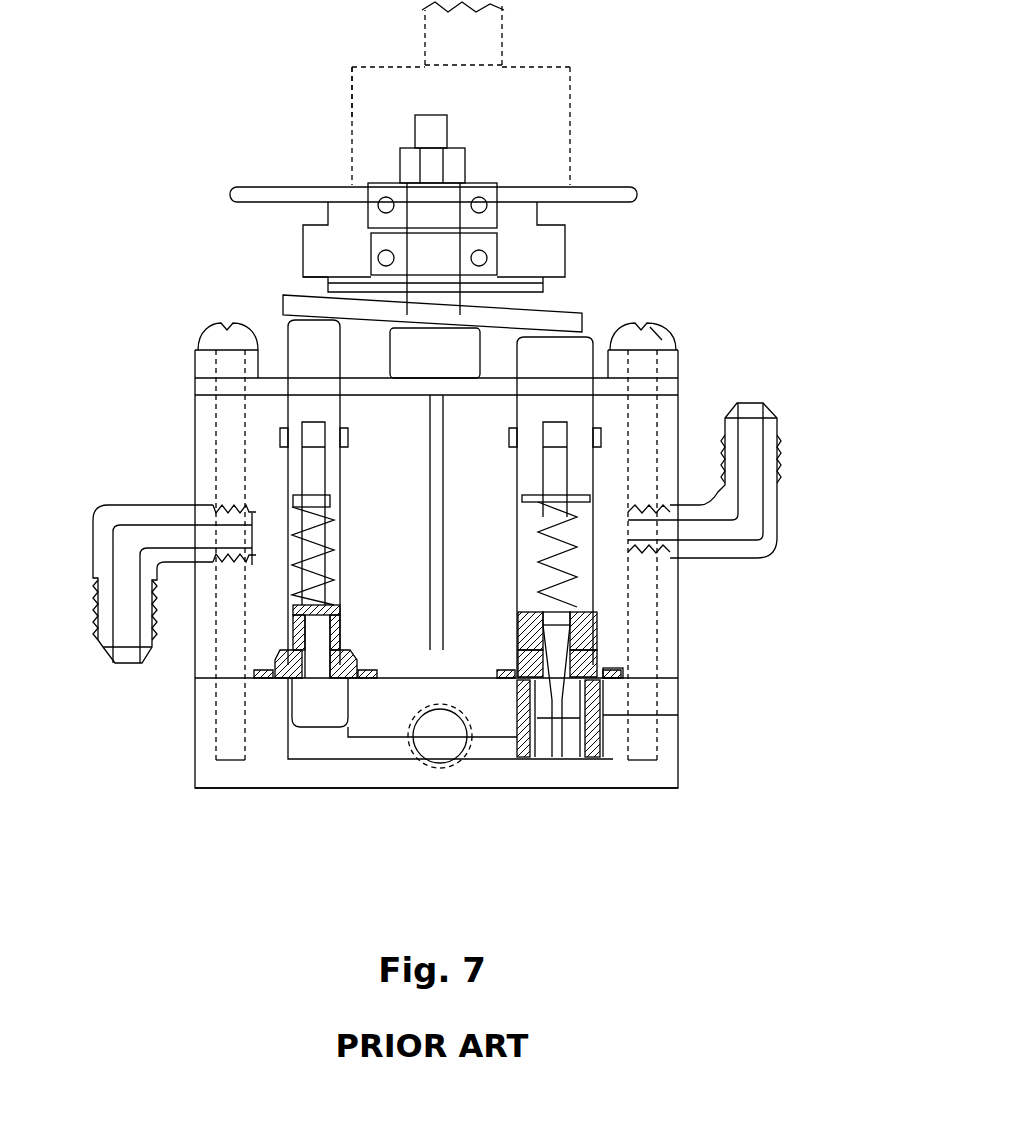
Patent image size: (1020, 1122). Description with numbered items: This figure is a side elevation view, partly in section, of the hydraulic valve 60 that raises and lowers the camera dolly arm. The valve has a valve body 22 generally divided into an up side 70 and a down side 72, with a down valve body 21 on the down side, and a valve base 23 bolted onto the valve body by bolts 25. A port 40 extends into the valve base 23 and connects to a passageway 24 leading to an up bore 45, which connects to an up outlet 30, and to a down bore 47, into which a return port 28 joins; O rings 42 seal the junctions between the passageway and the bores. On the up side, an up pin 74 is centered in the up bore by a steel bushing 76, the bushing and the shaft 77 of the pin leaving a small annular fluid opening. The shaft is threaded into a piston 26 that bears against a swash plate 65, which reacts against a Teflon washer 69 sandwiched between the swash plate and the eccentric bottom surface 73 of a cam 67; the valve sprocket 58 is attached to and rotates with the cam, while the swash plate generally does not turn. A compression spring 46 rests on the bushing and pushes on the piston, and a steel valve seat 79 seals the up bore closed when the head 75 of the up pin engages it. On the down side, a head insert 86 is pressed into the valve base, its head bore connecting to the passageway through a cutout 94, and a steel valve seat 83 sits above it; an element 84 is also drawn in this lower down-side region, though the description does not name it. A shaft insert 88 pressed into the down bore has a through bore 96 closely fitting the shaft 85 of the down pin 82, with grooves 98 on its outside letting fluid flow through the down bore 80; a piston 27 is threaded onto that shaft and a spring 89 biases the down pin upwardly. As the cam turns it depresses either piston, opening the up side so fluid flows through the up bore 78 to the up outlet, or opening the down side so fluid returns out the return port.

The down valve body 21 is at (676, 578).
The valve body 22 is at (205, 448).
The valve base 23 is at (290, 778).
The passageway 24 is at (290, 777).
The bolts 25 is at (660, 335).
The piston 26 is at (303, 365).
The piston 27 is at (577, 365).
The return port 28 is at (752, 408).
The up outlet 30 is at (105, 660).
The port 40 is at (420, 752).
The O rings 42 is at (287, 682).
The up bore 45 is at (336, 548).
The compression spring 46 is at (296, 524).
The down bore 47 is at (540, 578).
The valve sprocket 58 is at (606, 190).
The hydraulic valve 60 is at (530, 92).
The swash plate 65 is at (565, 312).
The cam 67 is at (553, 236).
The Teflon washer 69 is at (338, 288).
The up side 70 is at (322, 800).
The down side 72 is at (577, 800).
The eccentric bottom surface 73 is at (545, 283).
The up pin 74 is at (330, 585).
The head 75 is at (325, 750).
The steel bushing 76 is at (342, 640).
The shaft 77 is at (340, 612).
The up bore 78 is at (288, 606).
The steel valve seat 79 is at (300, 713).
The down bore 80 is at (345, 77).
The down pin 82 is at (537, 552).
The steel valve seat 83 is at (597, 655).
The nozzle 84 is at (563, 710).
The shaft 85 is at (527, 588).
The head insert 86 is at (597, 710).
The shaft insert 88 is at (597, 628).
The spring 89 is at (597, 580).
The cutout 94 is at (518, 745).
The through bore 96 is at (452, 166).
The grooves 98 is at (430, 135).